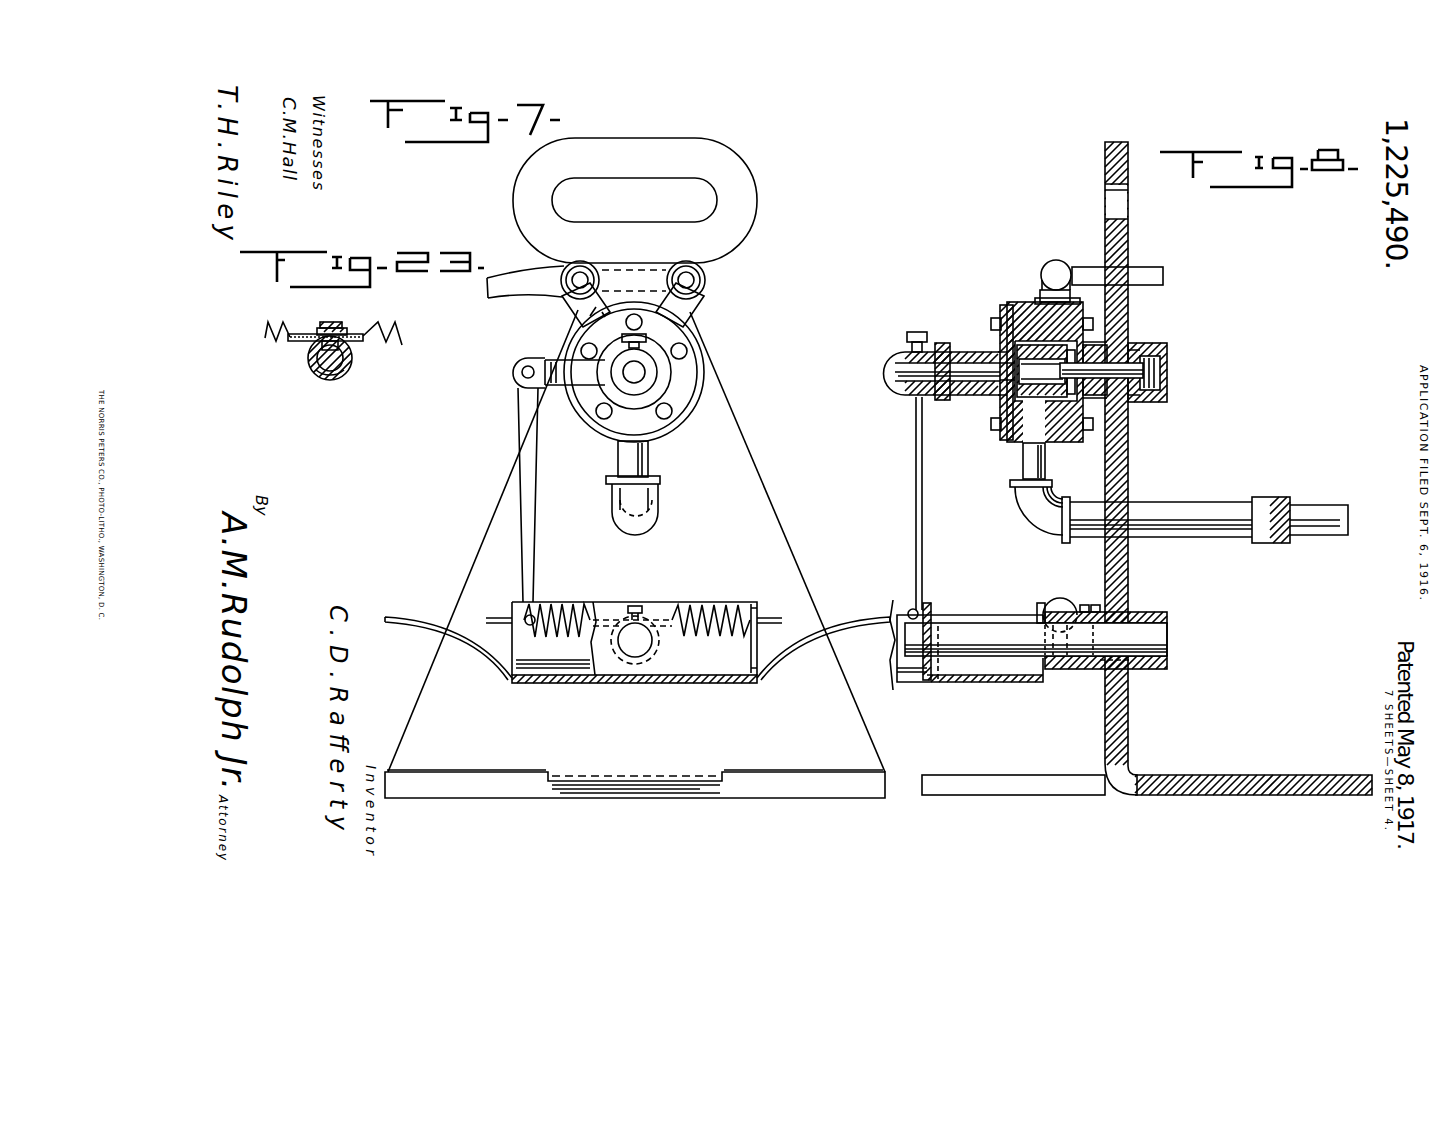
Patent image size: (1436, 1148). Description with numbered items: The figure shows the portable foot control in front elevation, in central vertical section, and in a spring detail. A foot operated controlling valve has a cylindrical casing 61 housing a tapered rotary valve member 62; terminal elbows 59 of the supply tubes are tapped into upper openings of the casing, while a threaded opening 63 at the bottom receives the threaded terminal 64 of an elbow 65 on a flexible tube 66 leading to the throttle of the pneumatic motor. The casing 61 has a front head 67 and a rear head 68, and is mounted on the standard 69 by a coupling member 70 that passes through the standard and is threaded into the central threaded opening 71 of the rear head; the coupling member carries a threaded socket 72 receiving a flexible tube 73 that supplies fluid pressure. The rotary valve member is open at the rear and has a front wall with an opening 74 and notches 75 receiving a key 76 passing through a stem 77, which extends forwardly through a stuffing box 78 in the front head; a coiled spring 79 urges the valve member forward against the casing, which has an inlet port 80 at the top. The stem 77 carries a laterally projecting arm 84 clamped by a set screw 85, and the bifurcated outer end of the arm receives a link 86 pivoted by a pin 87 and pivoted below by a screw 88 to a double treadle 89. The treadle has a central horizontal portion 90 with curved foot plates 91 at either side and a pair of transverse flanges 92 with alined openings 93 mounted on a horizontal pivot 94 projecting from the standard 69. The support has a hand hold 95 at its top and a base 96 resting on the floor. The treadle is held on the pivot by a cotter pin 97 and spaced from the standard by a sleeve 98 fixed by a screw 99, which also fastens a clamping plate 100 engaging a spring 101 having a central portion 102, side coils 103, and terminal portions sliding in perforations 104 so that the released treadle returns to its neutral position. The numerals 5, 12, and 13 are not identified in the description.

In FIG. 8, the supporting bracket 5 is at (1148, 269).
In FIG. 23, the spring plate 12 is at (302, 332).
In FIG. 23, the spring ends 13 is at (279, 352).
In FIG. 7, the terminal elbows 59 is at (707, 285).
In FIG. 8, the terminal elbows 59 is at (1060, 262).
In FIG. 7, the cylindrical casing 61 is at (700, 406).
In FIG. 8, the cylindrical casing 61 is at (1062, 447).
In FIG. 8, the rotary valve member 62 is at (1034, 298).
In FIG. 8, the threaded opening 63 is at (1026, 425).
In FIG. 7, the threaded terminal 64 is at (652, 447).
In FIG. 8, the threaded terminal 64 is at (1026, 456).
In FIG. 7, the elbow 65 is at (660, 508).
In FIG. 8, the elbow 65 is at (1048, 523).
In FIG. 8, the flexible tube 66 is at (1305, 544).
In FIG. 7, the front head 67 is at (685, 384).
In FIG. 8, the front head 67 is at (1030, 411).
In FIG. 8, the rear head 68 is at (1090, 406).
In FIG. 7, the standard 69 is at (765, 510).
In FIG. 8, the coupling member 70 is at (1138, 404).
In FIG. 8, the central threaded opening 71 is at (1098, 346).
In FIG. 8, the threaded socket 72 is at (1152, 393).
In FIG. 8, the flexible tube 73 is at (1160, 368).
In FIG. 8, the opening 74 is at (1006, 310).
In FIG. 8, the notches 75 is at (1002, 357).
In FIG. 8, the key 76 is at (1003, 389).
In FIG. 8, the stem 77 is at (897, 381).
In FIG. 8, the stuffing box 78 is at (942, 344).
In FIG. 8, the coiled spring 79 is at (1163, 351).
In FIG. 8, the inlet port 80 is at (1093, 329).
In FIG. 7, the arm 84 is at (590, 401).
In FIG. 7, the set screw 85 is at (652, 338).
In FIG. 8, the set screw 85 is at (908, 338).
In FIG. 7, the link 86 is at (538, 546).
In FIG. 8, the link 86 is at (914, 569).
In FIG. 7, the pin 87 is at (518, 373).
In FIG. 7, the screw 88 is at (525, 632).
In FIG. 7, the double treadle 89 is at (690, 678).
In FIG. 7, the central horizontal portion 90 is at (722, 686).
In FIG. 7, the foot plates 91 is at (420, 632).
In FIG. 8, the foot plates 91 is at (895, 671).
In FIG. 7, the transverse flanges 92 is at (578, 670).
In FIG. 8, the transverse flanges 92 is at (934, 605).
In FIG. 8, the alined openings 93 is at (940, 684).
In FIG. 7, the horizontal pivot 94 is at (632, 648).
In FIG. 23, the horizontal pivot 94 is at (353, 363).
In FIG. 8, the horizontal pivot 94 is at (1020, 663).
In FIG. 8, the hand hold 95 is at (1108, 161).
In FIG. 7, the base 96 is at (720, 160).
In FIG. 8, the base 96 is at (1027, 797).
In FIG. 8, the cotter pin 97 is at (930, 685).
In FIG. 7, the sleeve 98 is at (662, 653).
In FIG. 23, the sleeve 98 is at (333, 380).
In FIG. 8, the sleeve 98 is at (1093, 670).
In FIG. 23, the screw 99 is at (342, 326).
In FIG. 8, the screw 99 is at (1095, 608).
In FIG. 7, the clamping plate 100 is at (628, 606).
In FIG. 23, the clamping plate 100 is at (320, 346).
In FIG. 8, the clamping plate 100 is at (1063, 612).
In FIG. 7, the spring 101 is at (534, 606).
In FIG. 7, the central portion 102 is at (665, 616).
In FIG. 8, the central portion 102 is at (1168, 636).
In FIG. 7, the side coils 103 is at (760, 612).
In FIG. 7, the perforations 104 is at (480, 620).